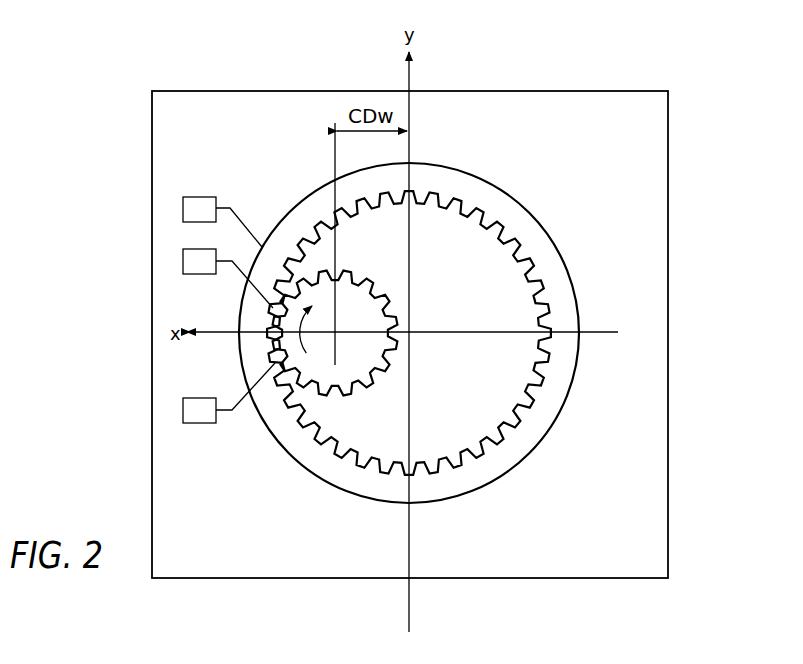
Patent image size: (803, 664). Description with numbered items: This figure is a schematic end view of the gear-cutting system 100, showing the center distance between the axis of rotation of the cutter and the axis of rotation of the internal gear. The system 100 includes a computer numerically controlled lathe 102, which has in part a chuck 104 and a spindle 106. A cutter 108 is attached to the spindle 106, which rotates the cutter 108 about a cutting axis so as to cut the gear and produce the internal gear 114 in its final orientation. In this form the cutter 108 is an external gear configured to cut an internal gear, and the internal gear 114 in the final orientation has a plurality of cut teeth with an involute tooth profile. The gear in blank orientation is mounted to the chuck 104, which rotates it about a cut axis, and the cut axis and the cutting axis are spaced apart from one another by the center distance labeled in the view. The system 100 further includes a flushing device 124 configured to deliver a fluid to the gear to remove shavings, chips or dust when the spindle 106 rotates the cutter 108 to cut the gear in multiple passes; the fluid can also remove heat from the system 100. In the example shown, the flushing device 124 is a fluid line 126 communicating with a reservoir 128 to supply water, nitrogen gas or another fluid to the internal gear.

The system 100 is at (630, 54).
The computer numerically controlled (CNC) lathe 102 is at (152, 117).
The chuck 104 is at (183, 212).
The spindle 106 is at (183, 410).
The cutter 108 is at (307, 382).
The internal gear 114 is at (513, 198).
The flushing device 124 is at (194, 239).
The fluid line 126 is at (240, 280).
The reservoir 128 is at (183, 263).